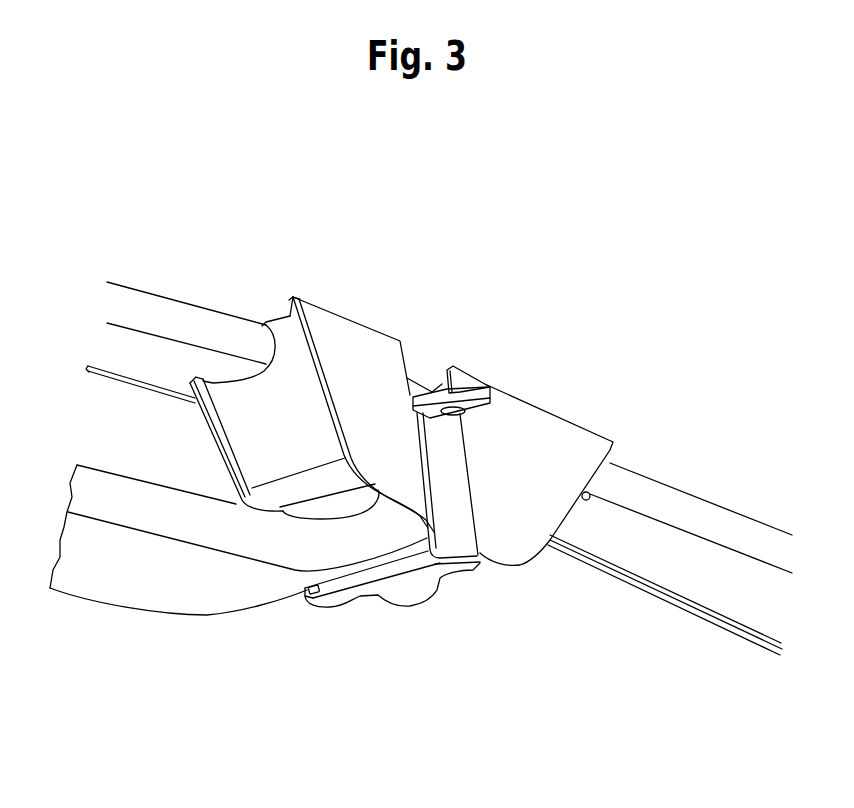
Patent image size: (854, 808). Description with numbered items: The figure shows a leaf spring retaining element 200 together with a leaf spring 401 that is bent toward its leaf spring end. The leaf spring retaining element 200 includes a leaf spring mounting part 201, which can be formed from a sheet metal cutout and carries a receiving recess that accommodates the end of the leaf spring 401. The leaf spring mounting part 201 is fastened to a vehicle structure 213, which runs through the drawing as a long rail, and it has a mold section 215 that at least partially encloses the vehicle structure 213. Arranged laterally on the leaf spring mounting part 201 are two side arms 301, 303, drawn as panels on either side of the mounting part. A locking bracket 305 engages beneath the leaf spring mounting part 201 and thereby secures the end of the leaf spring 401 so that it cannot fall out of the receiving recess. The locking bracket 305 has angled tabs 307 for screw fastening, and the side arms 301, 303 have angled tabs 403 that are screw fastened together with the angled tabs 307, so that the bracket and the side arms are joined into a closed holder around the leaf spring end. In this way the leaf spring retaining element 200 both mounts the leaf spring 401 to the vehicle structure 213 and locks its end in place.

The leaf spring retaining element 200 is at (360, 293).
The leaf spring mounting part 201 is at (252, 418).
The vehicle structure 213 is at (733, 533).
The mold section 215 is at (285, 340).
The side arm 301 is at (568, 445).
The side arm 303 is at (203, 378).
The locking bracket 305 is at (354, 598).
The angled tabs 307 is at (483, 410).
The leaf spring 401 is at (158, 577).
The angled tabs 403 is at (477, 382).